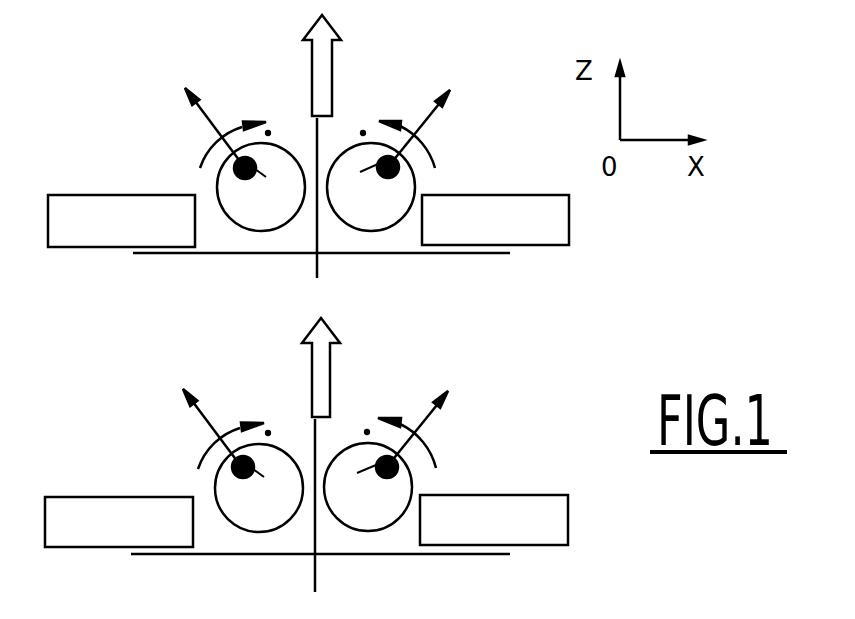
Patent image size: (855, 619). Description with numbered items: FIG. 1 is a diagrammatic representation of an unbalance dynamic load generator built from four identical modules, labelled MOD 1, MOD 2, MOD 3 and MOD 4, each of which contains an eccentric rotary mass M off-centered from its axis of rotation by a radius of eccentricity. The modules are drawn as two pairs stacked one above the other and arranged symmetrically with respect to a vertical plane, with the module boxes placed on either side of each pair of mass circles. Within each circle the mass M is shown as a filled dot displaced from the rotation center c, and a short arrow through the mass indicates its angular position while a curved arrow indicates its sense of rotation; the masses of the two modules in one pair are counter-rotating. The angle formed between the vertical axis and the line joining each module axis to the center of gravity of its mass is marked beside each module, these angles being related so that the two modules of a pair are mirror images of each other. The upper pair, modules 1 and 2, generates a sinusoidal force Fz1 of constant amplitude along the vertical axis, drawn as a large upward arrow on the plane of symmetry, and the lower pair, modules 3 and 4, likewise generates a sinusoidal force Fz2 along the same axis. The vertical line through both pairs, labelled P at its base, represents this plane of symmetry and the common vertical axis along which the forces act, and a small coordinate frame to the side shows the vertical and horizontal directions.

The wheel 1 is at (495, 220).
The eccentric mass 2 is at (121, 221).
The module MOD 3 is at (494, 520).
The module MOD 4 is at (119, 522).
The sinusoidal force Fz1 is at (347, 65).
The sinusoidal force Fz2 is at (347, 367).
The eccentric rotary mass M is at (315, 337).
The center of rotation c is at (318, 278).
The reference plane / axis P is at (352, 597).